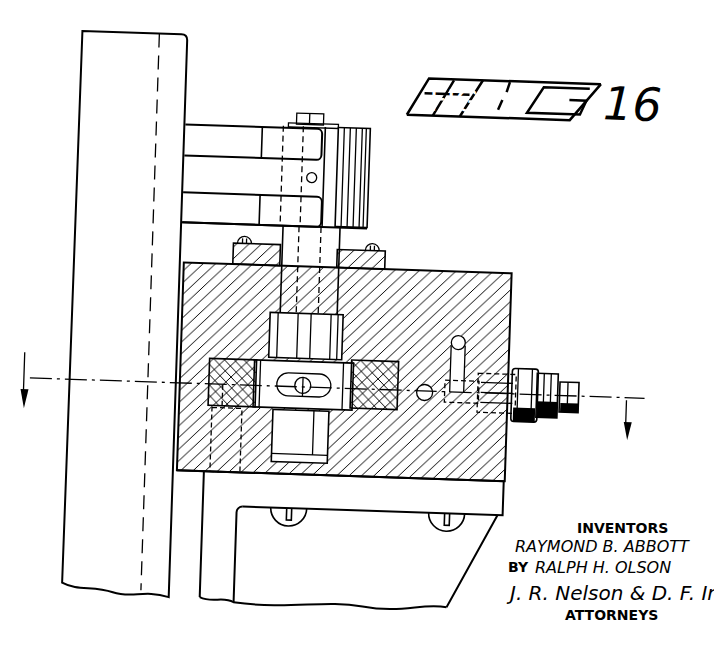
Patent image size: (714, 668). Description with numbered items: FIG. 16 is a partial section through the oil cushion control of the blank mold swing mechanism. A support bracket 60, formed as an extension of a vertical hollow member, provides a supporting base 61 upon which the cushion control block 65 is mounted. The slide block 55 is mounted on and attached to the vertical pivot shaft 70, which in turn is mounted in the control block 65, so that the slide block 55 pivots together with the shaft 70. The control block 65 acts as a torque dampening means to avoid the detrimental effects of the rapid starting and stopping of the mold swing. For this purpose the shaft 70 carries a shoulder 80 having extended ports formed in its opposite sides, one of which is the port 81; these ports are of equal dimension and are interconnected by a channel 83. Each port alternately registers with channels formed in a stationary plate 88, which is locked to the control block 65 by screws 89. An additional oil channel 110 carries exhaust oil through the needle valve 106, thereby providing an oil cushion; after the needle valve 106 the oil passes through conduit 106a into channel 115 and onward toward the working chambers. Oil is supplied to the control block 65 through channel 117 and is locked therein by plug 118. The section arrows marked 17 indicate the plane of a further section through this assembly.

The slide block 55 is at (116, 151).
The support bracket 60 is at (438, 562).
The supporting base 61 is at (489, 491).
The cushion control block 65 is at (474, 273).
The vertical pivot shaft 70 is at (335, 240).
The shoulder 80 is at (268, 408).
The port 81 is at (322, 394).
The channel 83 is at (300, 436).
The stationary plate 88 is at (382, 354).
The screws 89 is at (198, 481).
The needle valve 106 is at (564, 373).
The conduit 106a is at (474, 348).
The oil channel 110 is at (433, 395).
The channel 115 is at (466, 353).
The channel 117 is at (331, 245).
The plug 118 is at (304, 116).
The section line 17- 17 is at (324, 407).